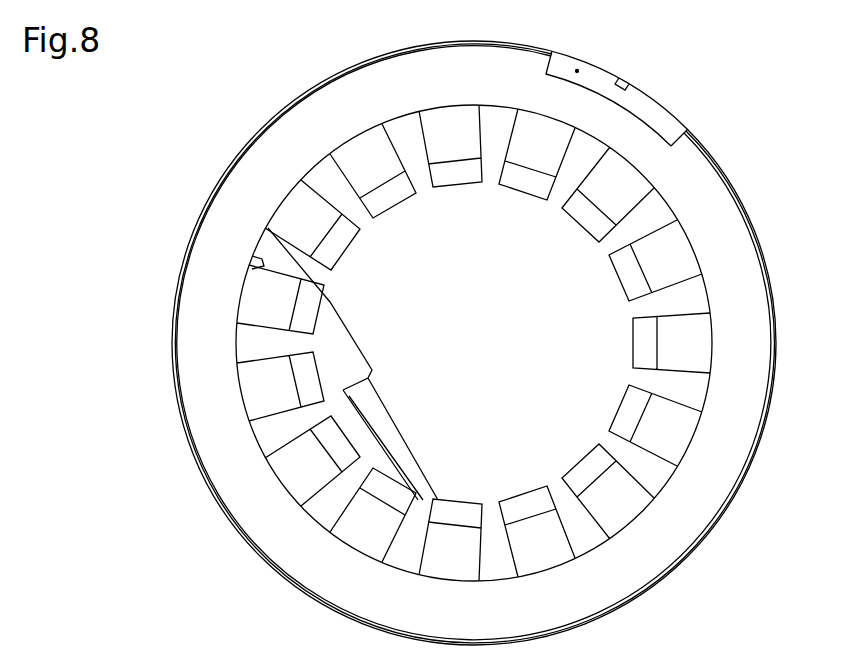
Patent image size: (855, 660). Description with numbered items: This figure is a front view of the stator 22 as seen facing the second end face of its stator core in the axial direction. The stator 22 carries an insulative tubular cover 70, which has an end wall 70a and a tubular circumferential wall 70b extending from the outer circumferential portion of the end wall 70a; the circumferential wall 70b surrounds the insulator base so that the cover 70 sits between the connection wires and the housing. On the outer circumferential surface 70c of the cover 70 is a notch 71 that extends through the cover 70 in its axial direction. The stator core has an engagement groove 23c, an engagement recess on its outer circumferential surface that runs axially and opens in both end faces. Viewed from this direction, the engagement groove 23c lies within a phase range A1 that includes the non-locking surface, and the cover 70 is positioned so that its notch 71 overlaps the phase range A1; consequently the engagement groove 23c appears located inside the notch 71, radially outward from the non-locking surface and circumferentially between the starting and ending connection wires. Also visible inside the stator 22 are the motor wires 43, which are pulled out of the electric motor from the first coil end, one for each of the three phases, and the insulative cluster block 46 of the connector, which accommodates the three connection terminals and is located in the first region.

The cover 70 is at (474, 331).
The end wall 70a is at (474, 343).
The circumferential wall 70b is at (474, 343).
The outer circumferential surface 70c is at (474, 336).
The stator 22 is at (619, 98).
The notch 71 is at (704, 130).
The engagement groove 23c is at (632, 65).
The phase range A1 is at (584, 48).
The cluster block 46 is at (337, 309).
The motor wires 43 is at (390, 439).